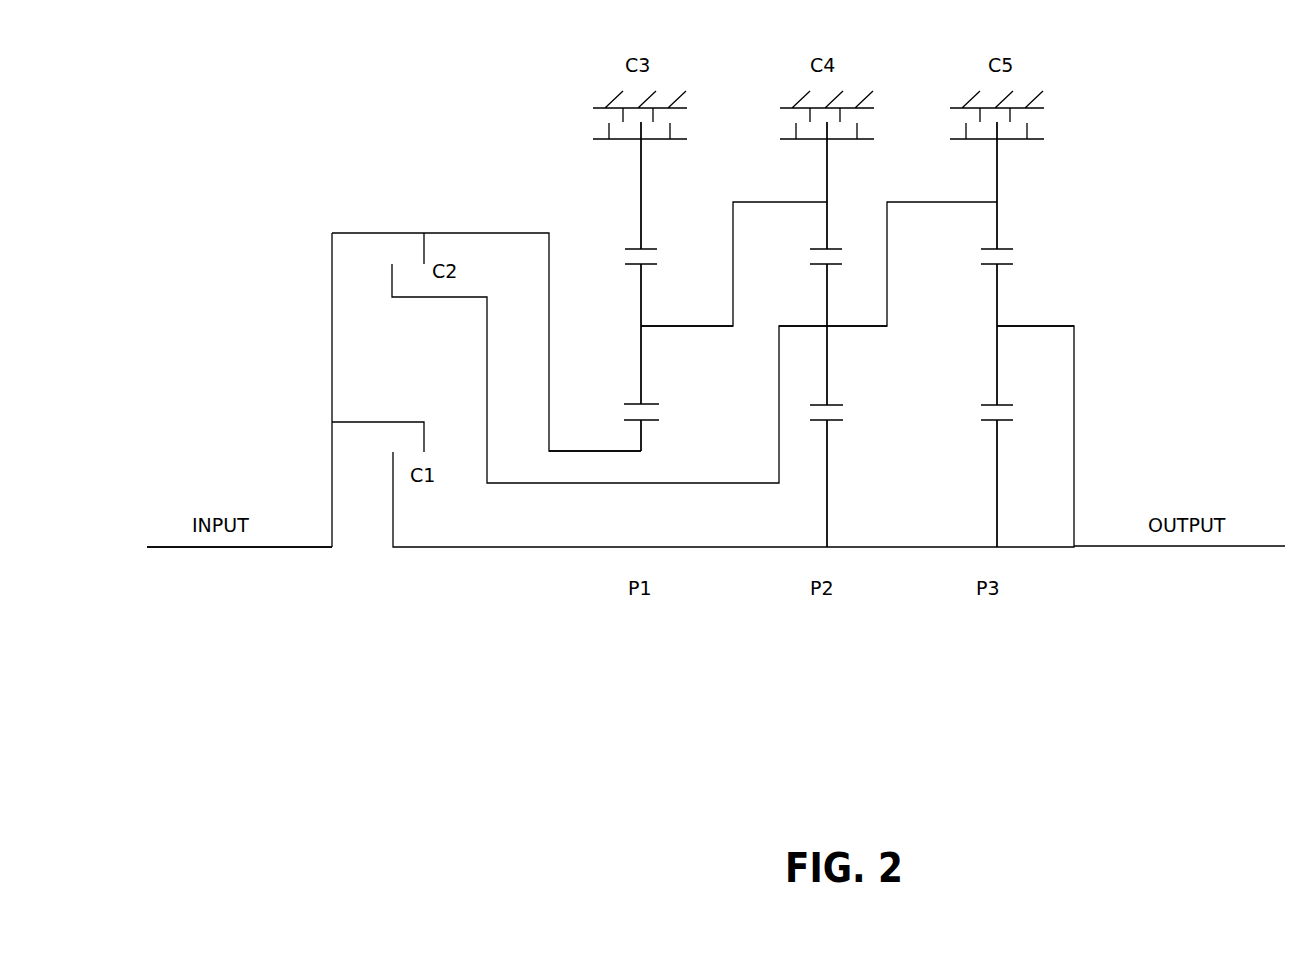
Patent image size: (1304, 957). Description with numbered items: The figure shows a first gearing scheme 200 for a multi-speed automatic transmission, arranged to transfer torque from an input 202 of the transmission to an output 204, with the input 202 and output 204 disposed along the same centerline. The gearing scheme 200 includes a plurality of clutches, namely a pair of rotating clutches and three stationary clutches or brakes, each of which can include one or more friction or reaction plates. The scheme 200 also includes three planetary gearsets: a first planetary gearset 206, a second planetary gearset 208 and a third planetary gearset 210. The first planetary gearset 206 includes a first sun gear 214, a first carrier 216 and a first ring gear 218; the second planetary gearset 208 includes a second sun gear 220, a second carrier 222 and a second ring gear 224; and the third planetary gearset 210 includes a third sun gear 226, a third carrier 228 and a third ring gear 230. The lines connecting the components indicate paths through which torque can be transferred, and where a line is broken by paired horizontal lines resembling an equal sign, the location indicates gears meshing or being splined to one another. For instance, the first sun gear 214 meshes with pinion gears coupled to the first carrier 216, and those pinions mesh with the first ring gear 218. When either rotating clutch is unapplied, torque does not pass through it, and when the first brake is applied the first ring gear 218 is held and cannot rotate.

The gearing scheme 200 is at (372, 112).
The input 202 is at (225, 552).
The output 204 is at (1198, 552).
The first planetary gearset 206 is at (657, 614).
The second planetary gearset 208 is at (823, 614).
The third planetary gearset 210 is at (1000, 614).
The P1 sun gear 214 is at (641, 428).
The P1 carrier 216 is at (641, 357).
The P1 ring gear 218 is at (641, 186).
The P2 sun gear 220 is at (827, 470).
The P2 carrier 222 is at (827, 370).
The P2 ring gear 224 is at (827, 168).
The P3 sun gear 226 is at (997, 470).
The P3 carrier 228 is at (997, 302).
The P3 ring gear 230 is at (997, 168).